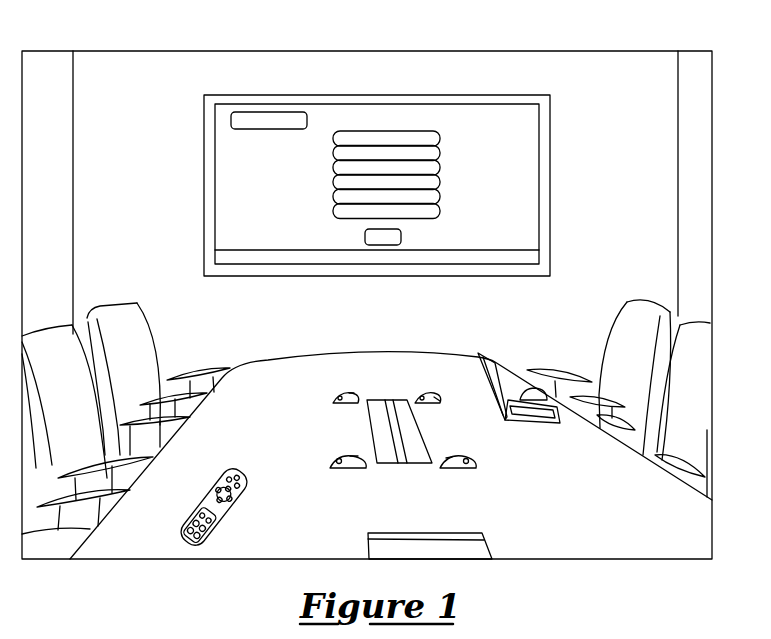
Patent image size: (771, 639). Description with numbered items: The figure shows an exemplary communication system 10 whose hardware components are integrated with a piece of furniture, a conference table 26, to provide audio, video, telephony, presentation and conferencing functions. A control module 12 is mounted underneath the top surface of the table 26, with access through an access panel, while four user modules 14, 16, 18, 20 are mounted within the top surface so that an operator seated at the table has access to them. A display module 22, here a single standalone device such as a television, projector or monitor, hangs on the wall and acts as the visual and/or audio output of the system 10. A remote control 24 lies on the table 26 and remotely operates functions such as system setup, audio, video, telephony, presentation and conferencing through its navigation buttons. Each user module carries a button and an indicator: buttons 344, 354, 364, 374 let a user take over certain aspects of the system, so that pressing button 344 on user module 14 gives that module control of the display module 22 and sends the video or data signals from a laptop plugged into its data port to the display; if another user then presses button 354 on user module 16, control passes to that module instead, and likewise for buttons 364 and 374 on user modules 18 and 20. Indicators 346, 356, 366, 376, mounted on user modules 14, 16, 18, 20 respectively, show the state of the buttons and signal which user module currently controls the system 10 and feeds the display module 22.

The communication system 10 is at (617, 33).
The control module 12 is at (463, 549).
The user module 14 is at (343, 394).
The user module 16 is at (425, 396).
The user module 18 is at (476, 461).
The user module 20 is at (341, 467).
The display module 22 is at (485, 124).
The remote control 24 is at (195, 549).
The conference table 26 is at (652, 525).
The button 344 is at (333, 397).
The indicator 346 is at (352, 393).
The button 354 is at (453, 395).
The indicator 356 is at (418, 396).
The button 364 is at (466, 458).
The indicator 366 is at (446, 458).
The button 374 is at (338, 457).
The indicator 376 is at (366, 448).